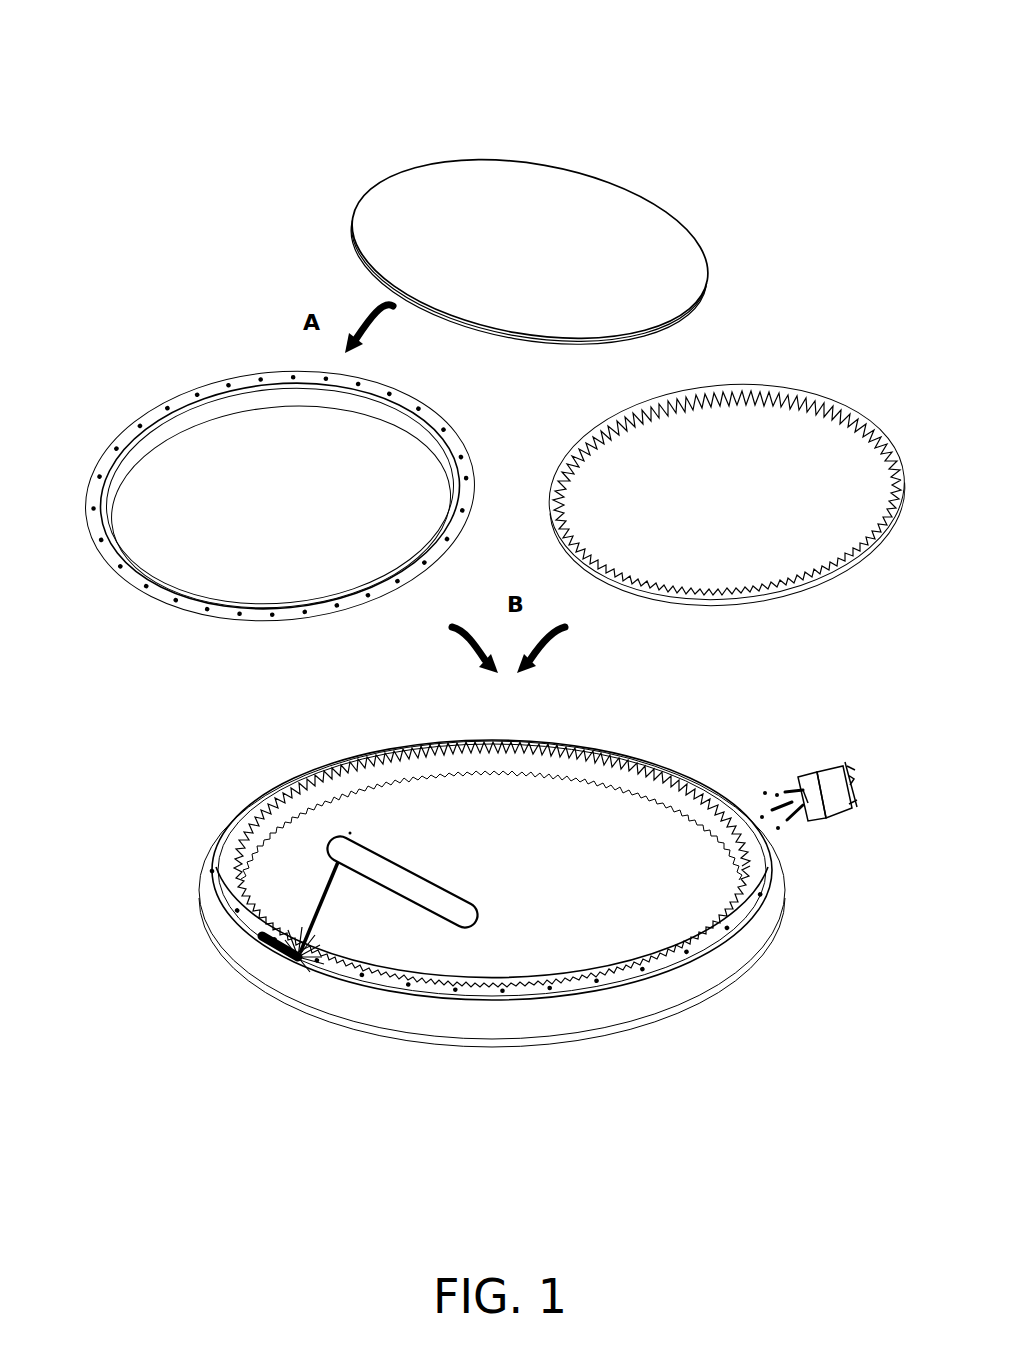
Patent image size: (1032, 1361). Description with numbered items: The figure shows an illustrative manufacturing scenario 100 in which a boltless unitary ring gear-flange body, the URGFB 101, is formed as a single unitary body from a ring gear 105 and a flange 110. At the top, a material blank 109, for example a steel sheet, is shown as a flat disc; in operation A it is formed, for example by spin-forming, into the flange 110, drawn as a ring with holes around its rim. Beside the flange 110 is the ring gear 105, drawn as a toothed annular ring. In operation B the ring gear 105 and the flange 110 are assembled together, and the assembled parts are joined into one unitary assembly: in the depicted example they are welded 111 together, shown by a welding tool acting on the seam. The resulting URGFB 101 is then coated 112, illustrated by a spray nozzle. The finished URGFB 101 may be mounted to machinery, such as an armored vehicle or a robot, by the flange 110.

The depicted scenario 100 is at (163, 44).
The unitary ring gear-flange body (URGFB) 101 is at (209, 751).
The ring gear 105 is at (767, 388).
The material blank 109 is at (703, 247).
The flange 110 is at (202, 392).
The welding 111 is at (315, 917).
The coating 112 is at (784, 793).